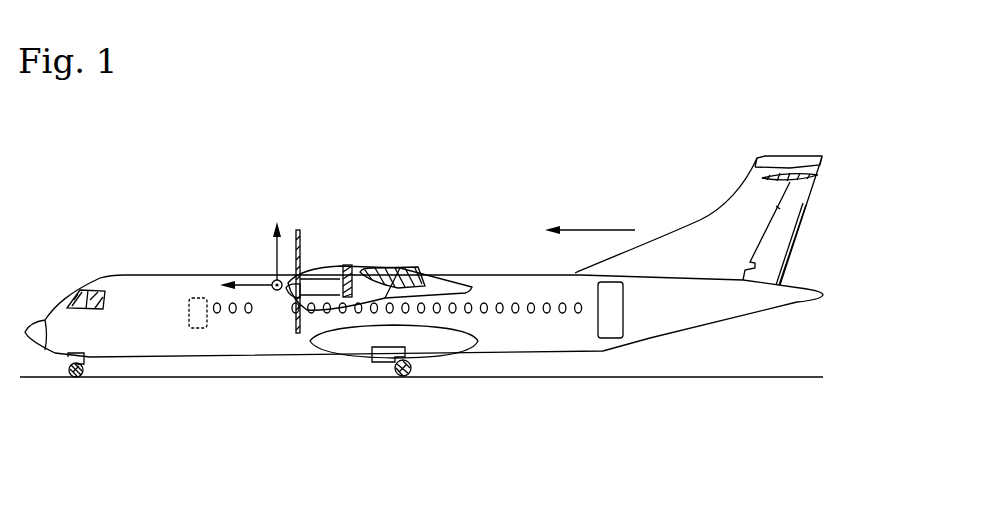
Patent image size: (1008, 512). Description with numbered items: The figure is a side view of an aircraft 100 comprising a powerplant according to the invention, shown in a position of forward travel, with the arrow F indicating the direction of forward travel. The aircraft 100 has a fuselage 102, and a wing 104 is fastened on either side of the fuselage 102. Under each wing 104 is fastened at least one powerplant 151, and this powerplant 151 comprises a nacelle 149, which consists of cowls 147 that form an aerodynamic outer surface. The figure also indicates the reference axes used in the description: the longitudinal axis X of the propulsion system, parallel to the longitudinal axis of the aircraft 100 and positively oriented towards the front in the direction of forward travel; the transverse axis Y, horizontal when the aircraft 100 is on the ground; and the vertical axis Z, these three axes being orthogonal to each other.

The aircraft 100 is at (505, 198).
The fuselage 102 is at (695, 312).
The wing 104 is at (405, 268).
The cowls 147 is at (320, 287).
The nacelle 149 is at (337, 280).
The powerplant 151 is at (258, 225).